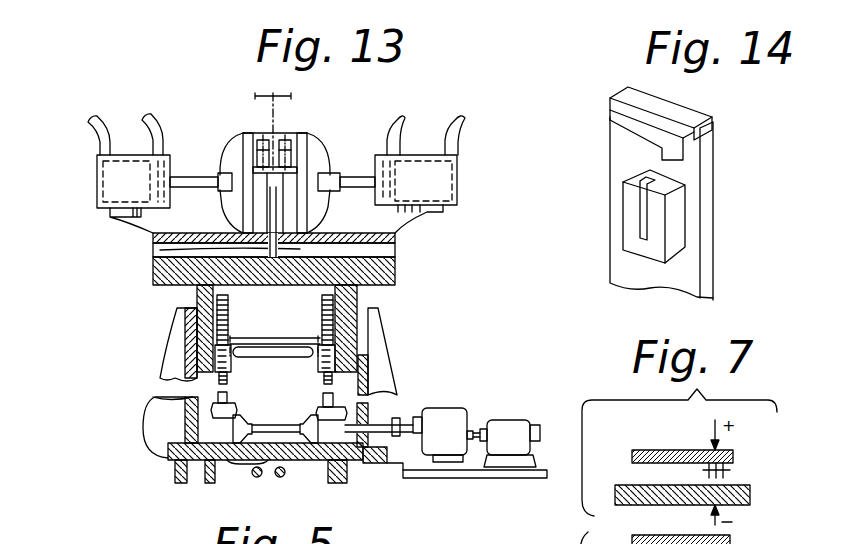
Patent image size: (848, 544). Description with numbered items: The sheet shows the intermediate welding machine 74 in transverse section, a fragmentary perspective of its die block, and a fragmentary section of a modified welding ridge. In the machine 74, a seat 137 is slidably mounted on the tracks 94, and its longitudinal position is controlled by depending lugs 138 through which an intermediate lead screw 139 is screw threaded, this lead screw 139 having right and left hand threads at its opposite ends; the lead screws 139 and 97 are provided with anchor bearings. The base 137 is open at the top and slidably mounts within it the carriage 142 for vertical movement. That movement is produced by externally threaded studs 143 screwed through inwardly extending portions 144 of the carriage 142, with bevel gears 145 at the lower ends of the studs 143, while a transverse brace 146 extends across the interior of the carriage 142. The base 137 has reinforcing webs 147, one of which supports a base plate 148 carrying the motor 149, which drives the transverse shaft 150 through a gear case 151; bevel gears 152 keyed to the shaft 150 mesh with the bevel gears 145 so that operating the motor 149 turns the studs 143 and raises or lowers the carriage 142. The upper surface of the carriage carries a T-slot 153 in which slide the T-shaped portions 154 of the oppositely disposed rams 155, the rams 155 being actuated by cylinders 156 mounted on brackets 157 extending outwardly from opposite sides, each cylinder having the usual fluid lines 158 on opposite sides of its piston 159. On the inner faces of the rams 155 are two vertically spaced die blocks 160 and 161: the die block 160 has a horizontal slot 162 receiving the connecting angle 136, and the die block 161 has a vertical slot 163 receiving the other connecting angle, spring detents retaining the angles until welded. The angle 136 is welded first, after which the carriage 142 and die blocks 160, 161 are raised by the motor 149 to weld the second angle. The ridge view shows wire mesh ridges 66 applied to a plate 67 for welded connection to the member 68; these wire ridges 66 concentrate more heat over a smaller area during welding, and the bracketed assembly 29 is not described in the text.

In FIG. 13, the intermediate machine 74 is at (458, 81).
In FIG. 13, the tracks 94 is at (175, 472).
In FIG. 13, the lead screw 97 is at (284, 475).
In FIG. 13, the connecting angle 136 is at (264, 140).
In FIG. 13, the seat 137 is at (370, 369).
In FIG. 13, the depending lugs 138 is at (250, 465).
In FIG. 13, the intermediate lead screw 139 is at (265, 476).
In FIG. 13, the carriage 142 is at (378, 280).
In FIG. 13, the externally threaded studs 143 is at (322, 316).
In FIG. 13, the inwardly extending portions 144 is at (320, 369).
In FIG. 13, the bevel gears 145 is at (320, 405).
In FIG. 13, the transverse brace 146 is at (262, 345).
In FIG. 13, the reinforcing webs 147 is at (155, 381).
In FIG. 13, the base plate 148 is at (477, 471).
In FIG. 13, the motor 149 is at (513, 425).
In FIG. 13, the transverse shaft 150 is at (406, 412).
In FIG. 13, the gear case 151 is at (466, 411).
In FIG. 13, the bevel gears 152 is at (322, 425).
In FIG. 13, the T-slot 153 is at (384, 250).
In FIG. 13, the T-shaped portions 154 is at (158, 258).
In FIG. 13, the rams 155 is at (245, 146).
In FIG. 14, the rams 155 is at (707, 197).
In FIG. 13, the cylinders 156 is at (112, 184).
In FIG. 13, the brackets 157 is at (151, 233).
In FIG. 13, the fluid lines 158 is at (156, 118).
In FIG. 13, the piston 159 is at (150, 150).
In FIG. 14, the die block 160 is at (612, 135).
In FIG. 14, the die block 161 is at (676, 225).
In FIG. 14, the horizontal slot 162 is at (674, 116).
In FIG. 14, the vertical slot 163 is at (640, 210).
In FIG. 7, the electrode stack 29 is at (666, 452).
In FIG. 7, the wire mesh ridges 66 is at (735, 470).
In FIG. 7, the plate 67 is at (688, 425).
In FIG. 7, the member 68 is at (652, 506).